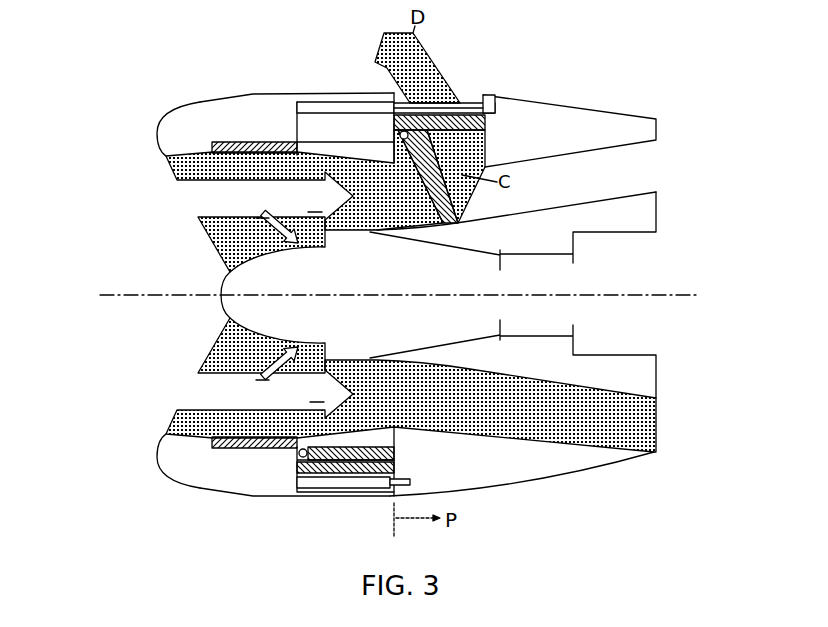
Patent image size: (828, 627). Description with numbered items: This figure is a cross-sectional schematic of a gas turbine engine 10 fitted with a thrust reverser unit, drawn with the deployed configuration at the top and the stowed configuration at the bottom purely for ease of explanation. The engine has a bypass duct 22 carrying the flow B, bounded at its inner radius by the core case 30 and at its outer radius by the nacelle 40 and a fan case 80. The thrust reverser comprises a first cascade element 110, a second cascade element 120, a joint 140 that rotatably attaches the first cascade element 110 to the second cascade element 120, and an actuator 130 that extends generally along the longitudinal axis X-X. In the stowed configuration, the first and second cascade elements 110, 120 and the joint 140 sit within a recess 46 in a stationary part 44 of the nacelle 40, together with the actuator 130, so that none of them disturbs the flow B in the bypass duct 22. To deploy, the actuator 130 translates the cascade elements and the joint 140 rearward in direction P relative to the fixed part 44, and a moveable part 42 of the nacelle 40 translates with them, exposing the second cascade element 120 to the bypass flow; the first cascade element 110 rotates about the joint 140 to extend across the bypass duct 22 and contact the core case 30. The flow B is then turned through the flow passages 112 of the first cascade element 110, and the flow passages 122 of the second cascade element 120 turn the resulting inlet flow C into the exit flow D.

The gas turbine engine 10 is at (128, 105).
The bypass duct 22 is at (214, 211).
The core case 30 is at (515, 248).
The nacelle 40 is at (245, 95).
The moveable part of the nacelle 42 is at (627, 127).
The stationary part of the nacelle 44 is at (205, 127).
The recess 46 is at (307, 127).
The fan case 80 is at (247, 448).
The first cascade element 110 is at (450, 200).
The flow passages 112 is at (414, 172).
The second cascade element 120 is at (478, 112).
The flow passages 122 is at (425, 117).
The actuator 130 is at (342, 108).
The joint 140 is at (400, 131).